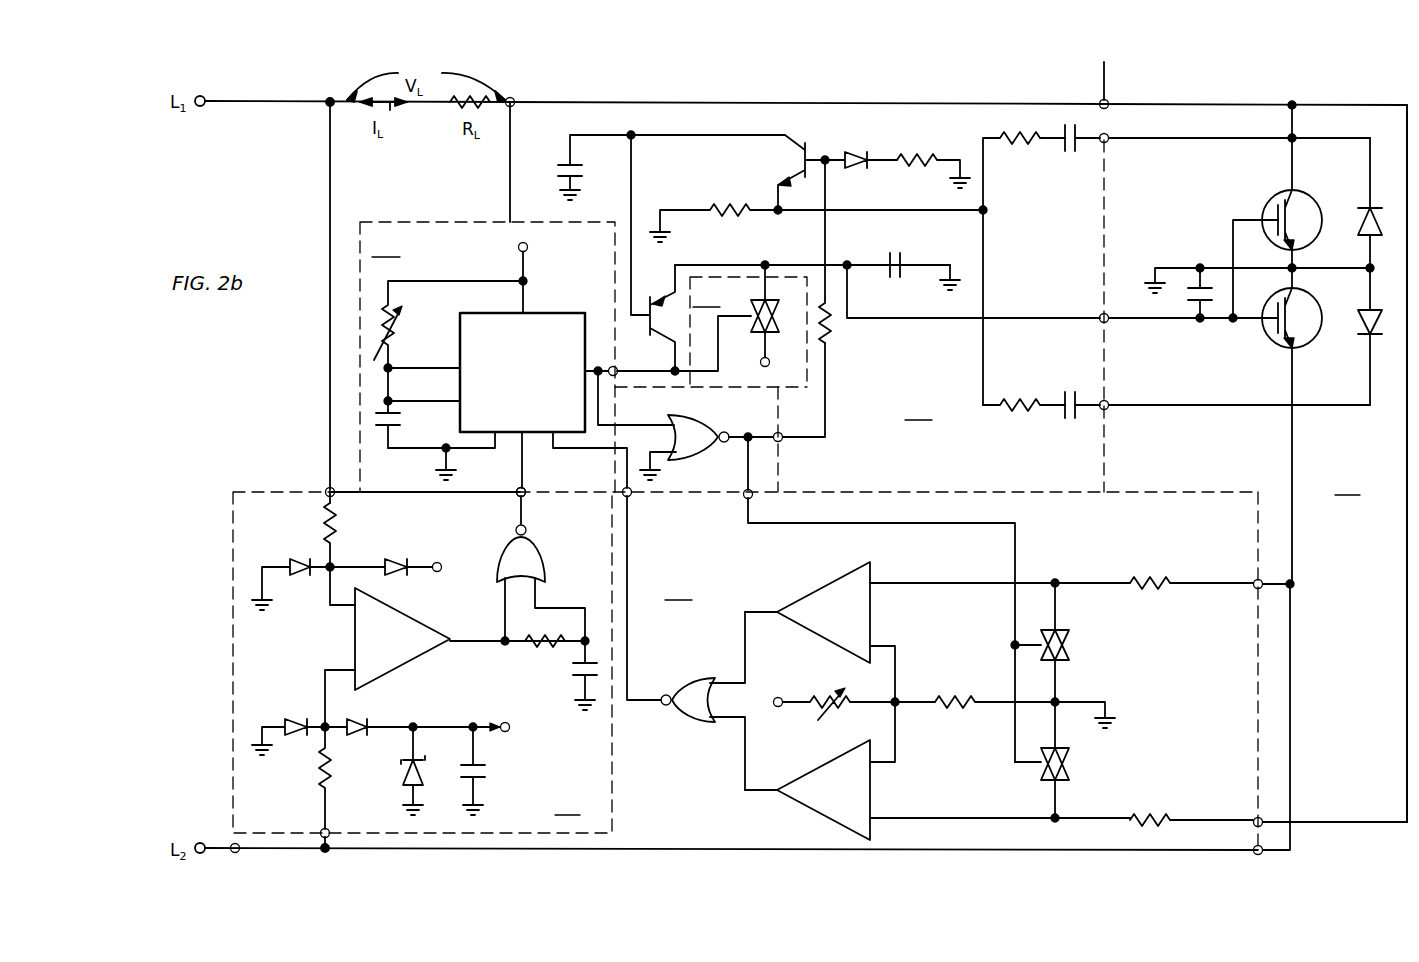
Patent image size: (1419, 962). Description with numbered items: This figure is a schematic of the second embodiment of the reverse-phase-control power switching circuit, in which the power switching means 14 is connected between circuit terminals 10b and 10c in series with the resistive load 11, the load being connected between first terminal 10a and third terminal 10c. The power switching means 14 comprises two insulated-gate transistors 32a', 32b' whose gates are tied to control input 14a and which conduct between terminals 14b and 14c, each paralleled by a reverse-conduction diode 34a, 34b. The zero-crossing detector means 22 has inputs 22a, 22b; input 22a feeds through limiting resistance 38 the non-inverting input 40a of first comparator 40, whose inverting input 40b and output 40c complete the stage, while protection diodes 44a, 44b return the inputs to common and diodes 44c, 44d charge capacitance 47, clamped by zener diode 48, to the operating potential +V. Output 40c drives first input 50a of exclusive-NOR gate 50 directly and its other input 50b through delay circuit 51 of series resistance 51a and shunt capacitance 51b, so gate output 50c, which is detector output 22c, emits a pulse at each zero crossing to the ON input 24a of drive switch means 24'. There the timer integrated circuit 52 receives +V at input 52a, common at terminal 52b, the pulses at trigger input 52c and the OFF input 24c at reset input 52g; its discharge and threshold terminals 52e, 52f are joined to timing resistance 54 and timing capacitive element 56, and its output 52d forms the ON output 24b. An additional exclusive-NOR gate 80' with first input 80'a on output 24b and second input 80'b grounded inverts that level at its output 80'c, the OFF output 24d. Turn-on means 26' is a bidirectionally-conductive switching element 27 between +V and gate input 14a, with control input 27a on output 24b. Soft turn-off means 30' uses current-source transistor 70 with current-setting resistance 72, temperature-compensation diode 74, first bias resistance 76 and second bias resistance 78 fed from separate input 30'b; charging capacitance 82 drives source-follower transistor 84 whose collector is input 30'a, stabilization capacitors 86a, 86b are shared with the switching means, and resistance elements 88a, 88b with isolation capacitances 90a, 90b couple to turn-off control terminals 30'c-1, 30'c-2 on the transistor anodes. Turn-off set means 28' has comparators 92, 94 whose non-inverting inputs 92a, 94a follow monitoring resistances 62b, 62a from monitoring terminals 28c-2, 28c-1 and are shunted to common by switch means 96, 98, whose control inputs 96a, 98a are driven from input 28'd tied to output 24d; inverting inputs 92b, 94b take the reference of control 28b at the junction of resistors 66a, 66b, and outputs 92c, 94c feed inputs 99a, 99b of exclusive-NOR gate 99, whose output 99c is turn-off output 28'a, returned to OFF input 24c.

The first circuit terminal 10a is at (327, 494).
The second circuit terminal 10b is at (240, 851).
The third circuit terminal 10c is at (513, 104).
The resistive load 11 is at (450, 108).
The power switching means 14 is at (1371, 463).
The drive input 14a is at (1108, 324).
The power switching means terminal 14b is at (1265, 852).
The power switching means terminal 14c is at (1110, 106).
The zero-crossing detector means 22 is at (567, 803).
The first detector input 22a is at (334, 497).
The second detector input 22b is at (333, 831).
The zero-crossing detector output 22c is at (518, 500).
The drive switch means 24' is at (387, 245).
The first (ON) input 24a is at (515, 494).
The first (ON) output 24b is at (600, 378).
The second (OFF) input 24c is at (632, 494).
The second (OFF) output 24d is at (775, 478).
The turn-on means 26' is at (708, 295).
The controllable bidirectionally-conductive switching element 27 is at (770, 298).
The control input of switching element 27a is at (748, 322).
The turn-off set means 28' is at (680, 588).
The turn-off set means output 28'a is at (654, 598).
The turn-off set means disable input 28'd is at (880, 626).
The control 28b is at (913, 688).
The monitoring terminal 28c-1 is at (1255, 820).
The monitoring terminal 28c-2 is at (1256, 582).
The soft turn-off means 30' is at (920, 408).
The drive turn-off means input terminal 30'a is at (634, 360).
The separate input terminal 30'b is at (806, 406).
The first turn-off control terminal 30'c-1 is at (1235, 153).
The second turn-off control terminal 30'c-2 is at (1184, 436).
The insulated-gate transistor 32a' is at (1260, 211).
The insulated-gate transistor 32b' is at (1255, 424).
The reverse-conduction diode 34a is at (1362, 222).
The reverse-conduction diode 34b is at (1364, 340).
The limiting series resistance 38 is at (326, 540).
The first comparator 40 is at (425, 625).
The non-inverting input 40a is at (352, 608).
The inverting input 40b is at (352, 670).
The first comparator output 40c is at (455, 642).
The first protection diode 44a is at (300, 580).
The second protection diode 44b is at (295, 740).
The protection diode 44c is at (403, 562).
The protection diode 44d is at (392, 760).
The capacitance 47 is at (490, 770).
The zener diode 48 is at (405, 775).
The exclusive-NOR gate 50 is at (548, 560).
The first gate input 50a is at (503, 608).
The second gate input 50b is at (540, 605).
The gate output 50c is at (528, 527).
The delay circuit 51 is at (531, 650).
The series resistance 51a is at (556, 640).
The shunt capacitance 51b is at (582, 658).
The timer integrated circuit 52 is at (460, 320).
The operating potential input 52a is at (526, 290).
The common terminal 52b is at (470, 440).
The trigger input terminal 52c is at (525, 492).
The timer output terminal 52d is at (587, 360).
The discharge terminal 52e is at (440, 368).
The threshold terminal 52f is at (445, 400).
The reset input 52g is at (560, 455).
The timing resistance 54 is at (392, 312).
The timing capacitive element 56 is at (382, 435).
The monitoring resistance 62a is at (1140, 820).
The monitoring resistance 62b is at (1138, 582).
The resistor 66a is at (808, 698).
The resistor 66b is at (955, 706).
The current-source transistor 70 is at (800, 140).
The current-setting resistance 72 is at (722, 205).
The temperature-compensation diode 74 is at (860, 152).
The first bias resistance 76 is at (905, 168).
The second bias resistance 78 is at (830, 340).
The exclusive-NOR gate 80' is at (714, 424).
The first gate input 80'a is at (680, 407).
The second gate input 80'b is at (682, 468).
The gate output 80'c is at (748, 426).
The charging capacitance 82 is at (560, 165).
The source-follower transistor 84 is at (648, 298).
The stabilization capacitor 86a is at (900, 262).
The stabilization capacitor 86b is at (1200, 305).
The resistance element 88a is at (1018, 150).
The resistance element 88b is at (1020, 400).
The isolation capacitance 90a is at (1068, 155).
The isolation capacitance 90b is at (1070, 400).
The comparator 92 is at (816, 590).
The non-inverting input 92a is at (880, 582).
The inverting input 92b is at (880, 645).
The comparator output 92c is at (758, 610).
The comparator 94 is at (806, 778).
The non-inverting input 94a is at (880, 818).
The inverting input 94b is at (880, 763).
The comparator output 94c is at (772, 796).
The controllable bidirectionally-conducting switch means 96 is at (1072, 645).
The switch control input 96a is at (1020, 660).
The controllable bidirectionally-conducting switch means 98 is at (1072, 765).
The switch control input 98a is at (1030, 770).
The exclusive-NOR gate 99 is at (676, 712).
The first gate input 99a is at (728, 680).
The second gate input 99b is at (714, 719).
The gate output 99c is at (650, 695).